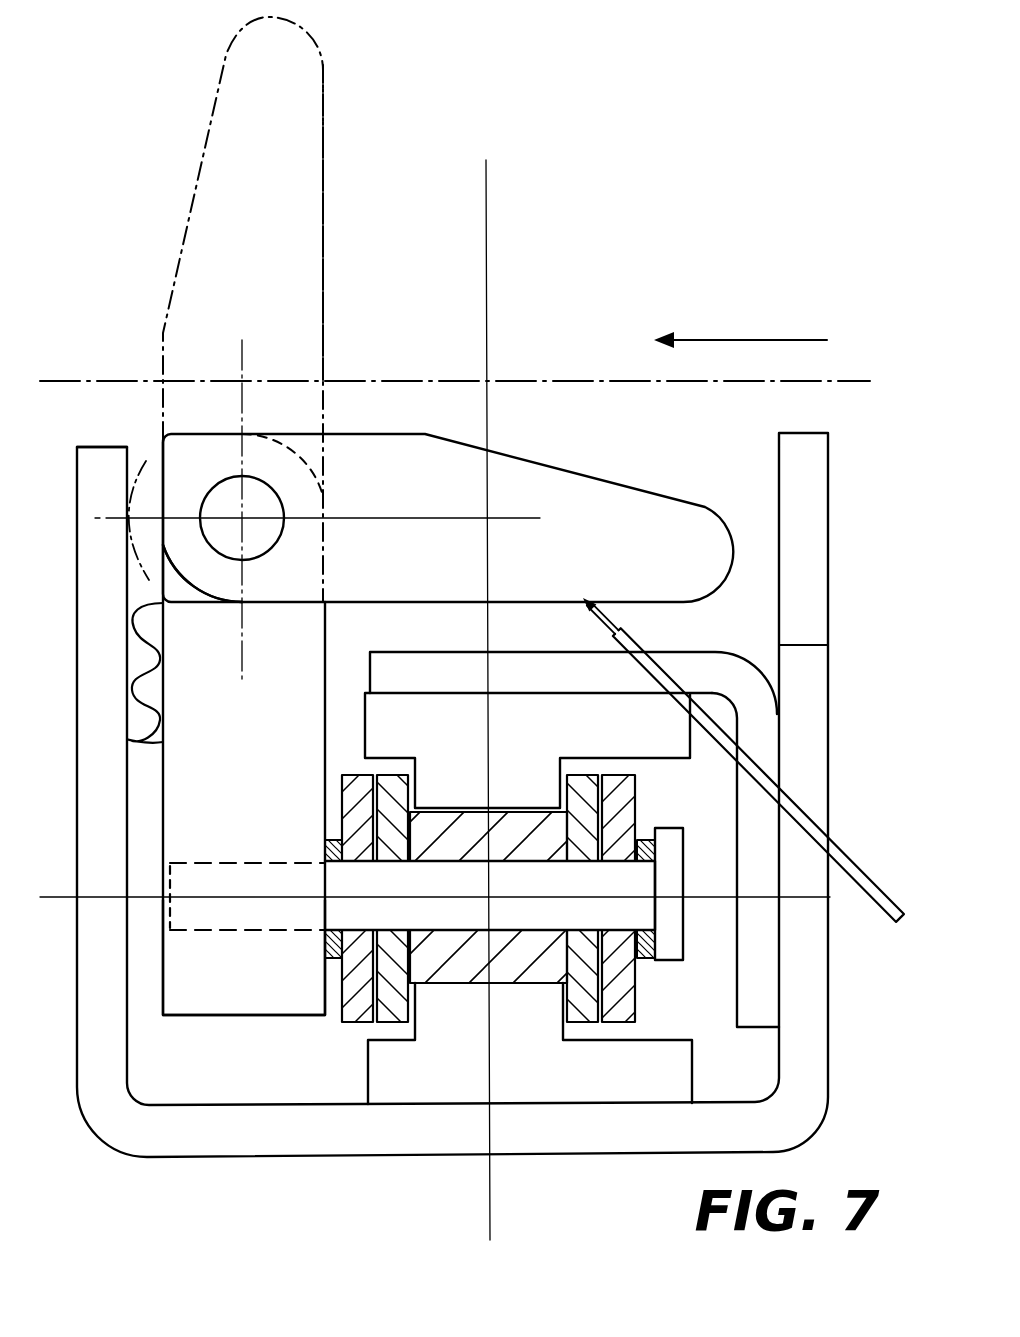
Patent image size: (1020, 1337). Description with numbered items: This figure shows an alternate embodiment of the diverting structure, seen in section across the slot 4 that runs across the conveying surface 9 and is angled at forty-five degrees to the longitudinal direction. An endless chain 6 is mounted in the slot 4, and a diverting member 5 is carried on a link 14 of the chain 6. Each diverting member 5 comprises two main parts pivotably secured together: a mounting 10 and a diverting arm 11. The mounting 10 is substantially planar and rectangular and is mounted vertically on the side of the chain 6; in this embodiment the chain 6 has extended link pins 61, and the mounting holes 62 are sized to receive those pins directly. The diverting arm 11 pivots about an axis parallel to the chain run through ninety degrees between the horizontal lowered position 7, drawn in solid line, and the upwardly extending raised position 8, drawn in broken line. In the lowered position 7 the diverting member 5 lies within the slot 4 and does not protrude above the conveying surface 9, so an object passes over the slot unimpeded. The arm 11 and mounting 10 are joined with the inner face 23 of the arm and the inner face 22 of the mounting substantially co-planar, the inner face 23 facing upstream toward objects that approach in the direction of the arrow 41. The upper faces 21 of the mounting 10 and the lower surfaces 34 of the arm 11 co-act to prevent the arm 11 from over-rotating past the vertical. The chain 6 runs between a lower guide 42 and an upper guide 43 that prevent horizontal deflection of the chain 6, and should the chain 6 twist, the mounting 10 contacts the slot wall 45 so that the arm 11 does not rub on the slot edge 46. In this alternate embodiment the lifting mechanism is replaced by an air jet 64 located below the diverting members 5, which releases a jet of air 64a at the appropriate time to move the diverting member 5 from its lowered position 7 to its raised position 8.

The slot 4 is at (87, 1072).
The diverting member 5 is at (230, 1045).
The chain 6 is at (630, 992).
The lowered position 7 is at (647, 485).
The raised position 8 is at (318, 40).
The conveying surface 9 is at (513, 380).
The mounting 10 is at (244, 904).
The diverting arm 11 is at (298, 185).
The link 14 is at (673, 855).
The upper faces 21 is at (206, 606).
The inner face 22 is at (325, 640).
The inner face 23 is at (323, 120).
The lower surfaces 34 is at (158, 482).
The arrow 41 is at (745, 338).
The lower guide 42 is at (545, 1022).
The upper guide 43 is at (673, 722).
The slot wall 45 is at (163, 742).
The slot edge 46 is at (123, 445).
The extended link pins 61 is at (537, 860).
The mounting holes 62 is at (215, 864).
The air jet 64 is at (790, 805).
The jet of air 64a is at (603, 612).